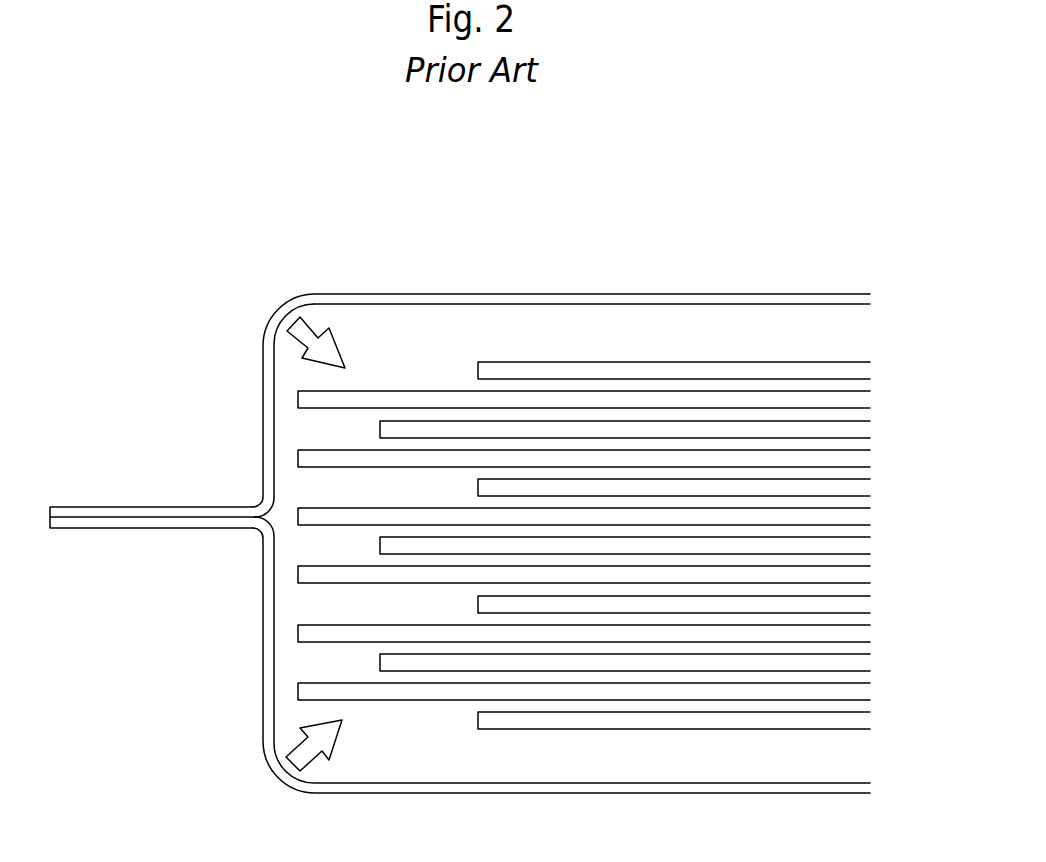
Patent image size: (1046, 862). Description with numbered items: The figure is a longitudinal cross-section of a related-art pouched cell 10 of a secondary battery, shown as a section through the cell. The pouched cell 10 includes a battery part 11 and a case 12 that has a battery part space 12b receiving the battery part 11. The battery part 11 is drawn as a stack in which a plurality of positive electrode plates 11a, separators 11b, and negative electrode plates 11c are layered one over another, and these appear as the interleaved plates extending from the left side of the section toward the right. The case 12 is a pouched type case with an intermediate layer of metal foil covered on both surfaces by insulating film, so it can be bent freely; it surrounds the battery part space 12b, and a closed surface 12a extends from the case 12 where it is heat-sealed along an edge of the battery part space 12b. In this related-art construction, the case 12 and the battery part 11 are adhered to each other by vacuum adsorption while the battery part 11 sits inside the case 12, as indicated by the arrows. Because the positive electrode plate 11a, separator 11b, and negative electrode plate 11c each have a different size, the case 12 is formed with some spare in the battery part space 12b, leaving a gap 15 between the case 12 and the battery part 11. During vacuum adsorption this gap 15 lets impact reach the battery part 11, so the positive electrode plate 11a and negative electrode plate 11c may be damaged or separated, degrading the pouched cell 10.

The pouched cell 10 is at (157, 181).
The battery part 11 is at (775, 222).
The positive electrode plate 11a is at (570, 367).
The separator 11b is at (635, 398).
The negative electrode plate 11c is at (710, 418).
The case 12 is at (418, 180).
The closed surface 12a is at (152, 507).
The battery part space 12b is at (537, 318).
The gap 15 is at (380, 327).